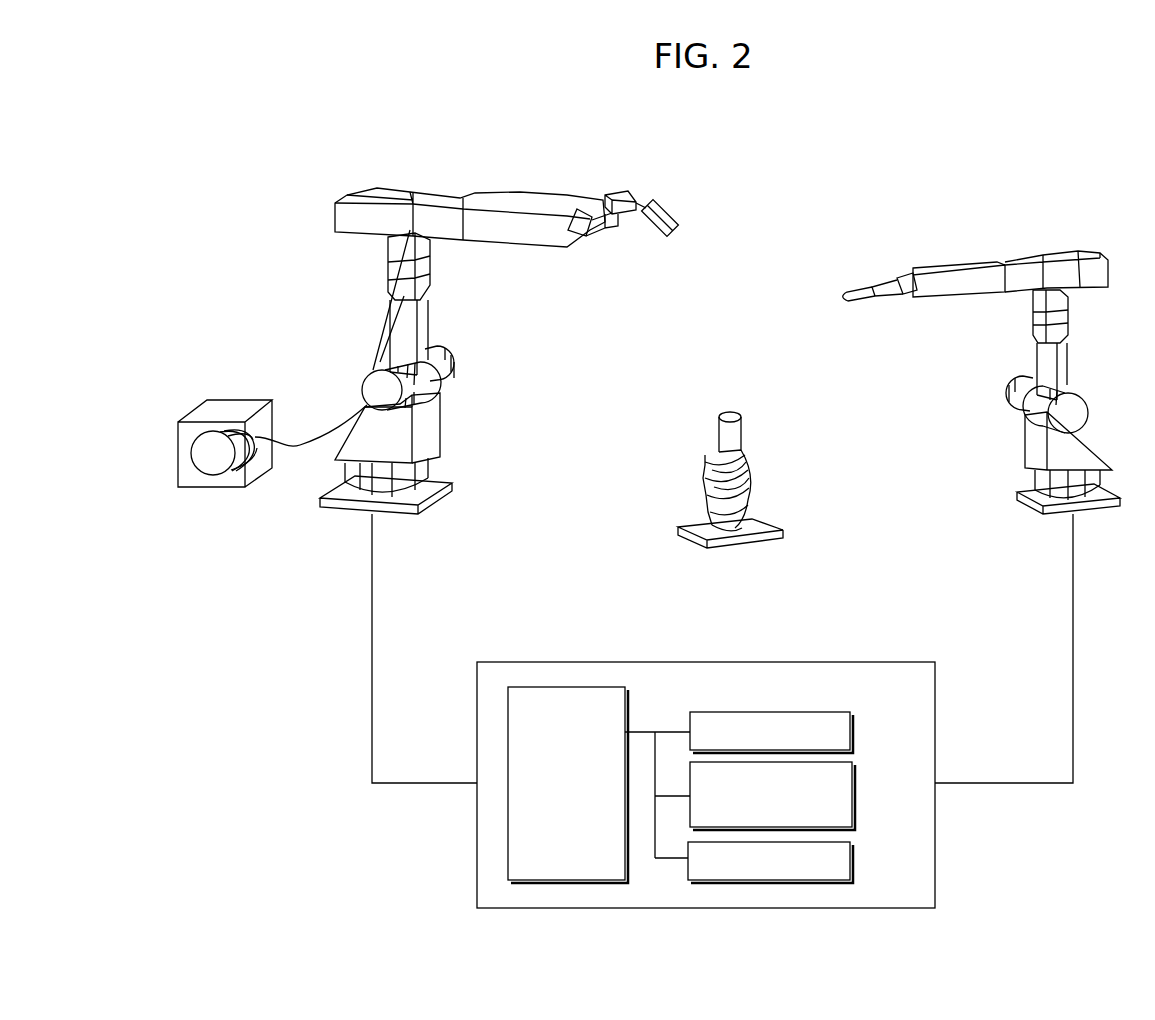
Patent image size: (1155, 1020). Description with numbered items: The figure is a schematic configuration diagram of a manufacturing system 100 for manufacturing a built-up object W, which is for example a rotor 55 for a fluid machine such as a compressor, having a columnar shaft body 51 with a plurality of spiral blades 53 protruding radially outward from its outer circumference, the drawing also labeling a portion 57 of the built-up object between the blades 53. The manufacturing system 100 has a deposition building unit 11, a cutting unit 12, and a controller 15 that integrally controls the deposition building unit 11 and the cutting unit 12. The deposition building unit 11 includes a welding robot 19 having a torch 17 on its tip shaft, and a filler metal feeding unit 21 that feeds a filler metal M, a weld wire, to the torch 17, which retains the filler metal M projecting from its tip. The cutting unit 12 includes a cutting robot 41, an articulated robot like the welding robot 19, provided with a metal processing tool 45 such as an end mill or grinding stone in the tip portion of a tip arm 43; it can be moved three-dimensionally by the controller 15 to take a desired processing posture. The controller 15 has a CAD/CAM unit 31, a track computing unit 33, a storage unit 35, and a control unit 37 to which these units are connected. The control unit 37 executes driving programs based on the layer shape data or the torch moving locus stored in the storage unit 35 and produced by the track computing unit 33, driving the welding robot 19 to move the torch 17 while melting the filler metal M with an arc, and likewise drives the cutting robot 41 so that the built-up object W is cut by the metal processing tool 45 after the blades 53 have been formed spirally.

The manufacturing system 100 is at (698, 163).
The deposition building unit 11 is at (347, 168).
The welding robot 19 is at (396, 207).
The torch 17 is at (667, 237).
The filler metal M is at (571, 198).
The filler metal feeding unit 21 is at (233, 400).
The cutting unit 12 is at (1002, 223).
The cutting robot 41 is at (1085, 255).
The tip arm 43 is at (952, 270).
The metal processing tool 45 is at (860, 292).
The built-up object W is at (748, 407).
The shaft body 51 is at (719, 428).
The blades 53 is at (705, 465).
The hub 57 is at (712, 470).
The rotor 55 is at (765, 467).
The controller 15 is at (862, 652).
The control unit 37 is at (626, 697).
The CAD/CAM unit 31 is at (852, 735).
The track computing unit 33 is at (854, 793).
The storage unit 35 is at (852, 862).